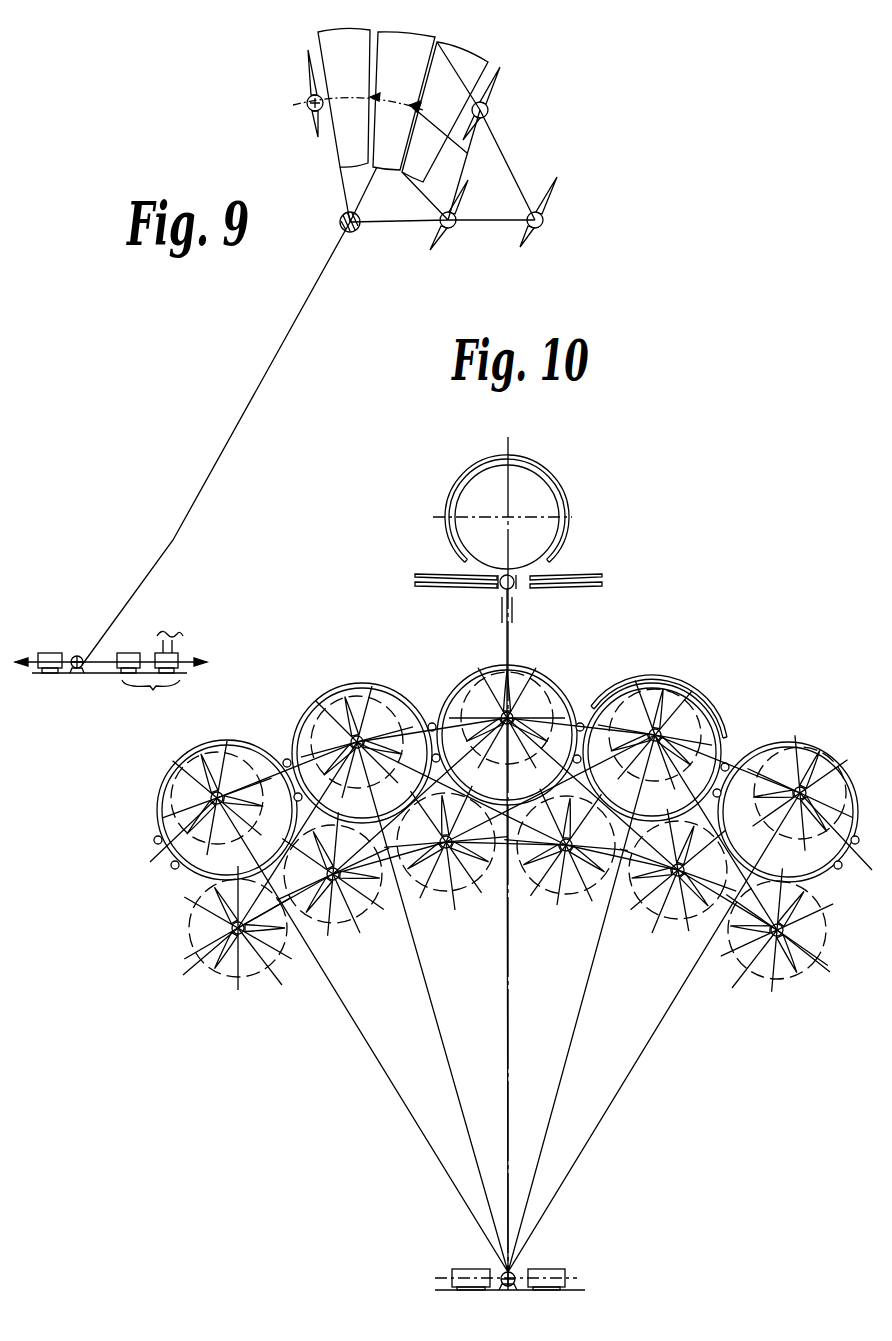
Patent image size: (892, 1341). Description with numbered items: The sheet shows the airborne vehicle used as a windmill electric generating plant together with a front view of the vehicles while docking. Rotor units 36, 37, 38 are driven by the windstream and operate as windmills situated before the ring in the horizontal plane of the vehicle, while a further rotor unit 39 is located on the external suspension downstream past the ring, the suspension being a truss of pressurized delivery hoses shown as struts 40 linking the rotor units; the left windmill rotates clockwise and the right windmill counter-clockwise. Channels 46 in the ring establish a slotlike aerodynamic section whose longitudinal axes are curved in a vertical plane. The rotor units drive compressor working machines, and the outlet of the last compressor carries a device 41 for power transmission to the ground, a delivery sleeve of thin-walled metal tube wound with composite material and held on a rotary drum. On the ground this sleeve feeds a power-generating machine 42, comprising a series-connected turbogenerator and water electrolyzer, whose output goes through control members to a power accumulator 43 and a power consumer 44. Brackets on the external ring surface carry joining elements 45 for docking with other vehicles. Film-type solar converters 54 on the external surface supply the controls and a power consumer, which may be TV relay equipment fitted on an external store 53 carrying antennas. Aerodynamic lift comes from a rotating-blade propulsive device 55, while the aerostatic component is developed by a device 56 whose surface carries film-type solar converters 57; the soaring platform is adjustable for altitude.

In FIG. 9, the rotor unit 36 is at (308, 108).
In FIG. 9, the rotor unit 37 is at (450, 228).
In FIG. 9, the rotor unit 38 is at (488, 108).
In FIG. 9, the rotor unit 39 is at (543, 226).
In FIG. 9, the struts 40 is at (469, 158).
In FIG. 9, the device for power transmission to the ground 41 is at (247, 403).
In FIG. 9, the power-generating machine 42 is at (158, 655).
In FIG. 9, the power accumulator 43 is at (157, 652).
In FIG. 9, the power consumer 44 is at (62, 628).
In FIG. 10, the joining elements 45 is at (727, 783).
In FIG. 9, the channels 46 is at (427, 79).
In FIG. 10, the external store 53 is at (508, 657).
In FIG. 10, the film-type solar converters 54 is at (707, 693).
In FIG. 10, the rotating-blade propulsive device 55 is at (585, 575).
In FIG. 10, the device developing aerostatic lift 56 is at (552, 487).
In FIG. 10, the film-type solar converters 57 is at (540, 487).